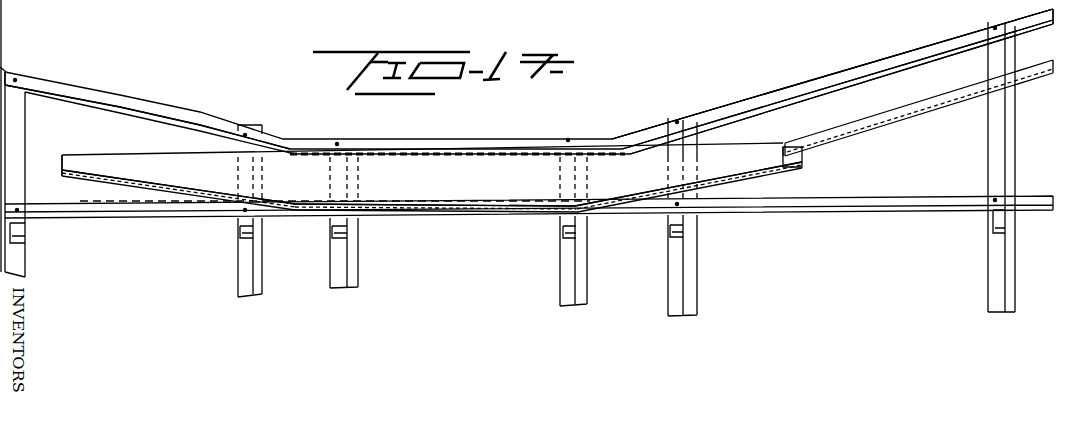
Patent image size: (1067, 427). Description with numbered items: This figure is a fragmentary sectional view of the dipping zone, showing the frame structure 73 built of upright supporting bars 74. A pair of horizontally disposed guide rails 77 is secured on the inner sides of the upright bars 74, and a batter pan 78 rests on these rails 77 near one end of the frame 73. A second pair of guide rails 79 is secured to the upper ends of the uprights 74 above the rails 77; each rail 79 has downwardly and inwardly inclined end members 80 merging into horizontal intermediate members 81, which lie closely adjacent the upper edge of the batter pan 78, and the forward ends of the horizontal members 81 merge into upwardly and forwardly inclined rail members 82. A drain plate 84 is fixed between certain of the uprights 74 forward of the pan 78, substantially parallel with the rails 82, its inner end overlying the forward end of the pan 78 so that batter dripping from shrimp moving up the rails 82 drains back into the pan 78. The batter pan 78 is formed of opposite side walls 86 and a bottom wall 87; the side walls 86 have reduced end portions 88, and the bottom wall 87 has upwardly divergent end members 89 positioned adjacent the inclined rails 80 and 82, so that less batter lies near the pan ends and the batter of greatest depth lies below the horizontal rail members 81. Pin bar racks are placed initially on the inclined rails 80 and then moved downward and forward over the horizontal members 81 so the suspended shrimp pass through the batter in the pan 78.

The frame structure 73 is at (823, 71).
The upright supporting bars 74 is at (340, 256).
The horizontally disposed guide rails 77 is at (778, 213).
The batter pan 78 is at (438, 181).
The second pair of guide rails 79 is at (119, 96).
The downwardly and inwardly inclined end members 80 is at (178, 122).
The horizontal intermediate members 81 is at (415, 146).
The upwardly and forwardly inclined rail members 82 is at (716, 102).
The drain plate 84 is at (917, 114).
The side walls 86 is at (422, 172).
The bottom wall 87 is at (483, 213).
The reduced end portions 88 is at (744, 178).
The upwardly divergent end members 89 is at (163, 194).